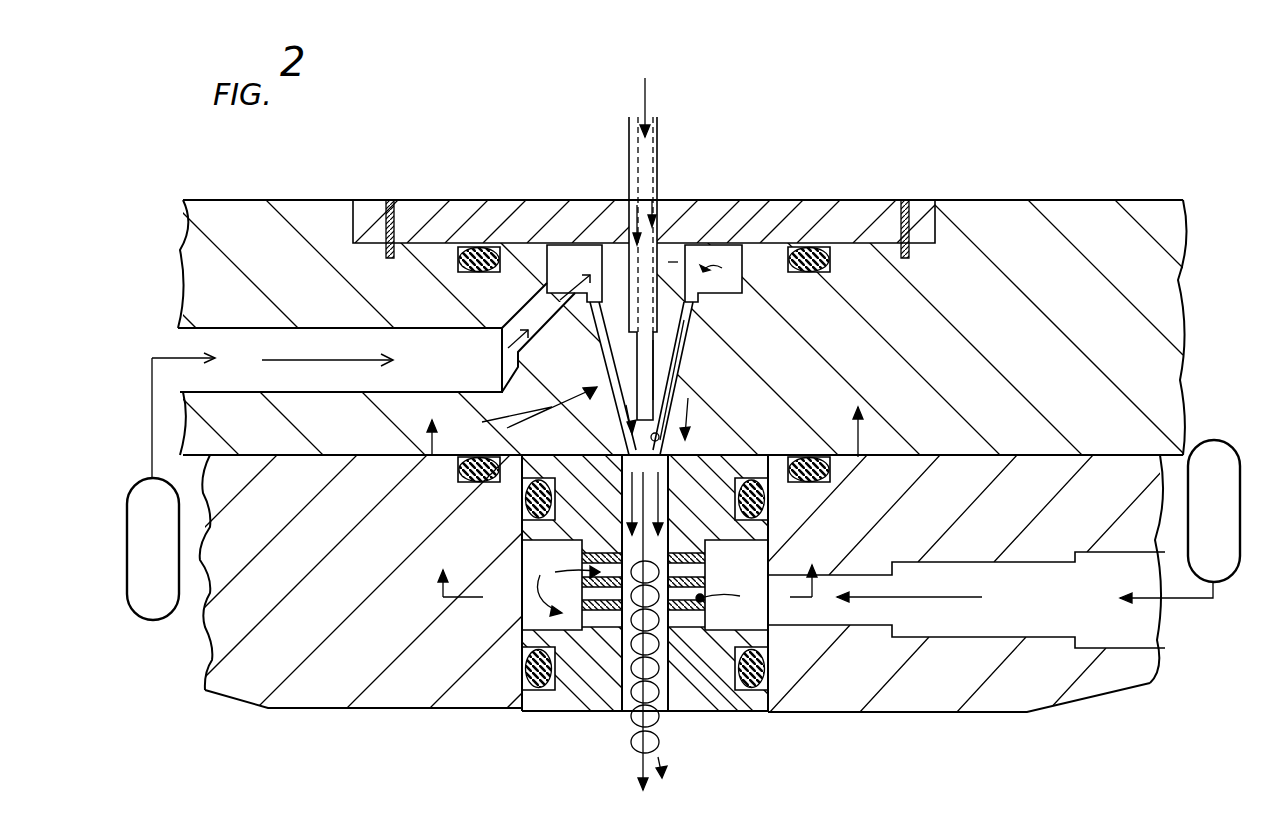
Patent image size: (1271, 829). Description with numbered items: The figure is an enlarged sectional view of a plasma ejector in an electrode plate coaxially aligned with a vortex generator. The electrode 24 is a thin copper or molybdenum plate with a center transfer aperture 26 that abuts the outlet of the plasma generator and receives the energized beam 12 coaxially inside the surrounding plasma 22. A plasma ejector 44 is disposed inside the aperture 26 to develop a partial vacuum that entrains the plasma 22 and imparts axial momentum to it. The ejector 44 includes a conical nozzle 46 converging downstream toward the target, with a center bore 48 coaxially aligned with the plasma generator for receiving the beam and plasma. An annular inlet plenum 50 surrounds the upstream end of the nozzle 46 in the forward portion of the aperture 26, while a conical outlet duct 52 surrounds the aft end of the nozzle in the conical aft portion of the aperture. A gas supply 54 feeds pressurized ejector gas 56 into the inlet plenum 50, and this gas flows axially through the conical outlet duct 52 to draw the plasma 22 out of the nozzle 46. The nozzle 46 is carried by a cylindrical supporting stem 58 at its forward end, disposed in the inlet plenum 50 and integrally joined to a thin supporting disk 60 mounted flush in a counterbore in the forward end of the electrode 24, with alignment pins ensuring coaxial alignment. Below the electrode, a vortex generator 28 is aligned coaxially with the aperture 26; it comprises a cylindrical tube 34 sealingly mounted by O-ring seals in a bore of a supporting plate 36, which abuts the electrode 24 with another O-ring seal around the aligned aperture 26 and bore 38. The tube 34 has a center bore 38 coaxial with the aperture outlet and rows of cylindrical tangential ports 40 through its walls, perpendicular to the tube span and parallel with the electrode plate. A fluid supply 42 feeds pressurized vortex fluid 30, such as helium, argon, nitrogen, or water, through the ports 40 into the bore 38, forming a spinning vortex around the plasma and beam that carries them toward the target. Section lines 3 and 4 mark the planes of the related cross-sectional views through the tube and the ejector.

The section line 3- 3 is at (634, 564).
The section line 4- 4 is at (656, 430).
The beam 12 is at (645, 82).
The plasma 22 is at (657, 160).
The electrode 24 is at (1137, 346).
The center transfer orifice or aperture 26 is at (692, 352).
The vortex generator 28 is at (1110, 455).
The vortex fluid 30 is at (948, 596).
The cylindrical body or tube 34 is at (600, 686).
The supporting plate 36 is at (1045, 515).
The center channel or bore 38 is at (668, 483).
The tangential holes or ports 40 is at (690, 648).
The fluid supply 42 is at (1222, 440).
The plasma eductor or ejector 44 is at (539, 407).
The conical tip or nozzle 46 is at (668, 388).
The center bore 48 is at (655, 362).
The inlet plenum 50 is at (727, 265).
The conical outlet channel or duct 52 is at (659, 437).
The gas supply 54 is at (160, 622).
The ejector gas 56 is at (318, 360).
The cylindrical supporting stem 58 is at (600, 287).
The supporting thin disk 60 is at (481, 200).